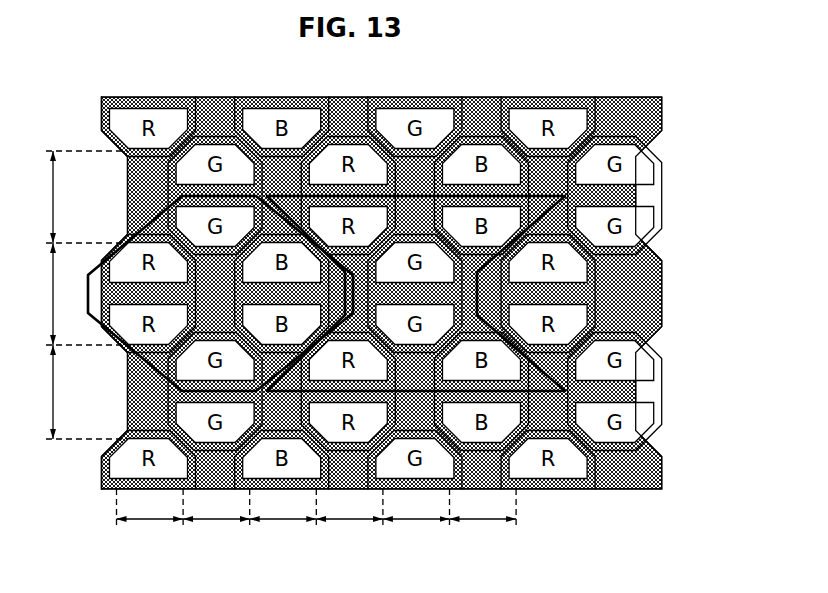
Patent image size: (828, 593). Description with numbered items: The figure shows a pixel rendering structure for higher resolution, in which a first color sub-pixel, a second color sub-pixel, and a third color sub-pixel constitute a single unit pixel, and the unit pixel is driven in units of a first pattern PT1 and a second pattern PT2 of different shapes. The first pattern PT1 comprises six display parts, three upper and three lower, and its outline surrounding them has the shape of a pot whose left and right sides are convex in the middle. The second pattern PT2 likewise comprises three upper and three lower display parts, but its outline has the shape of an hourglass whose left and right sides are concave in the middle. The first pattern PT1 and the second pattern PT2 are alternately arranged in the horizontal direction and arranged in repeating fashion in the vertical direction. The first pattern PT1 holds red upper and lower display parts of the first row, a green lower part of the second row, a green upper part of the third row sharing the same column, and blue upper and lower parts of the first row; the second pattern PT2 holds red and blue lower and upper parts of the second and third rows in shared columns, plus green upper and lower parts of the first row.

The first pattern PT1 is at (152, 223).
The second pattern PT2 is at (478, 293).